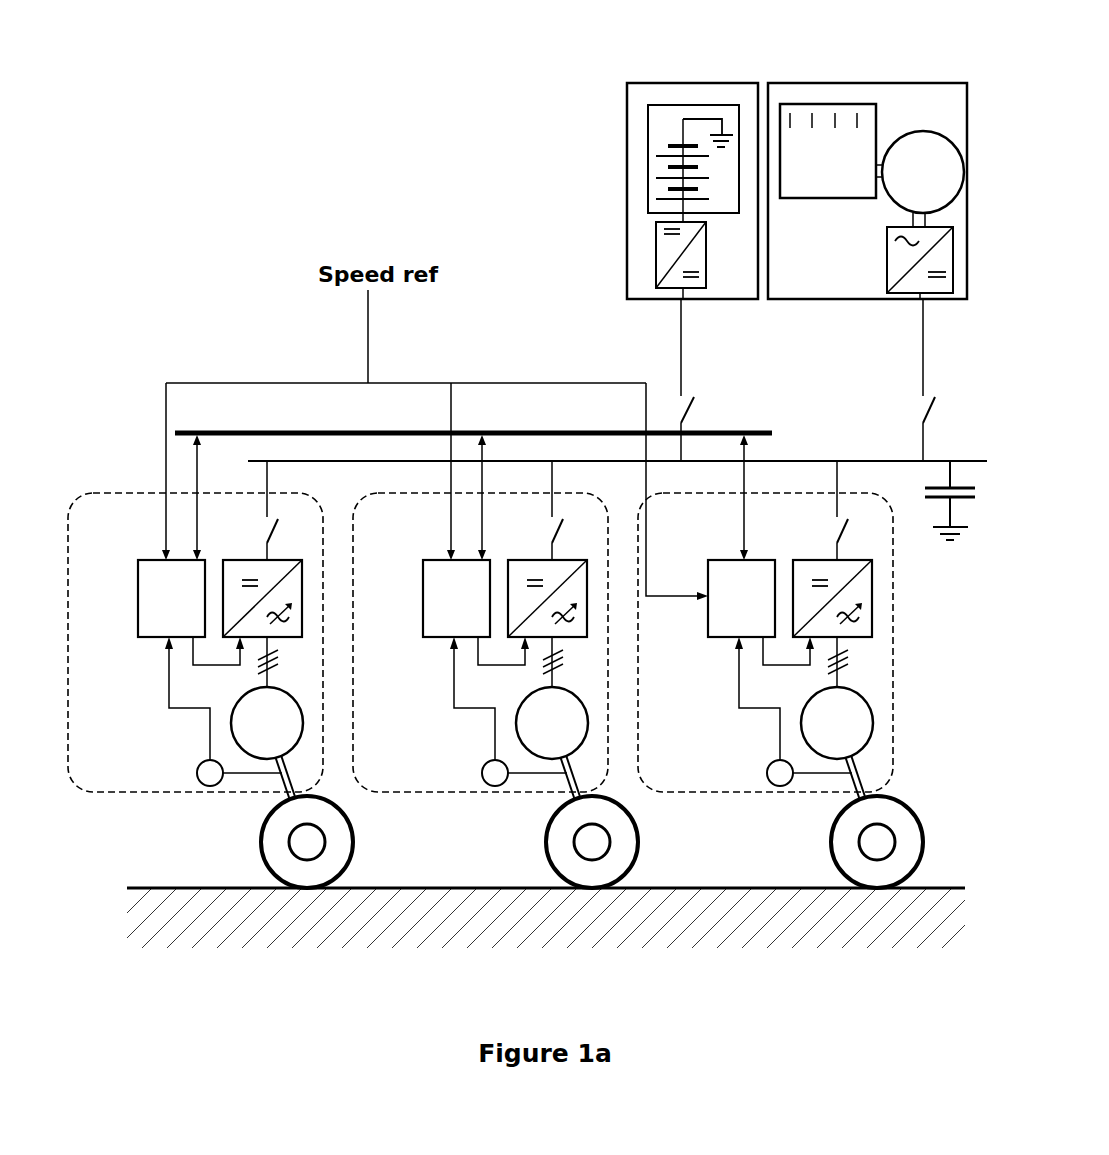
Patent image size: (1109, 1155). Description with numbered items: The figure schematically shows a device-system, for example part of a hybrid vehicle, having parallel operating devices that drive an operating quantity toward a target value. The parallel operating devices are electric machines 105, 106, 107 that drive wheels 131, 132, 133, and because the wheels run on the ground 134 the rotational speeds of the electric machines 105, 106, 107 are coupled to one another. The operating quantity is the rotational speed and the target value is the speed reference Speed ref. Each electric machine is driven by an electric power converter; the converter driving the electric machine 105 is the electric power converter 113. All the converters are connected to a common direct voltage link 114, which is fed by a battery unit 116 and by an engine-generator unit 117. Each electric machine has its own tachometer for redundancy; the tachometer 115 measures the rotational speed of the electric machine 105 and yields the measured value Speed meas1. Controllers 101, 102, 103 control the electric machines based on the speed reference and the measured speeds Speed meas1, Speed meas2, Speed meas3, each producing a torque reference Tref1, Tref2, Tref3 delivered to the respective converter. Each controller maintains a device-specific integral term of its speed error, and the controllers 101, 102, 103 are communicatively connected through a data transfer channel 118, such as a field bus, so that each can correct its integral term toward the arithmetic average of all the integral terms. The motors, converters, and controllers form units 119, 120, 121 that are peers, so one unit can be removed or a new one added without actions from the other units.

The controller 101 is at (156, 621).
The controller 102 is at (441, 621).
The controller 103 is at (726, 621).
The electric machine 105 is at (251, 745).
The electric machine 106 is at (536, 745).
The electric machine 107 is at (821, 745).
The electric power converter 113 is at (247, 560).
The direct voltage link 114 is at (792, 461).
The tachometer 115 is at (196, 773).
The battery unit 116 is at (683, 83).
The engine-generator unit 117 is at (845, 83).
The data transfer channel 118 is at (265, 433).
The unit 119 is at (97, 527).
The unit 120 is at (382, 527).
The unit 121 is at (682, 527).
The wheel 131 is at (261, 843).
The wheel 132 is at (546, 843).
The wheel 133 is at (831, 843).
The ground 134 is at (537, 932).